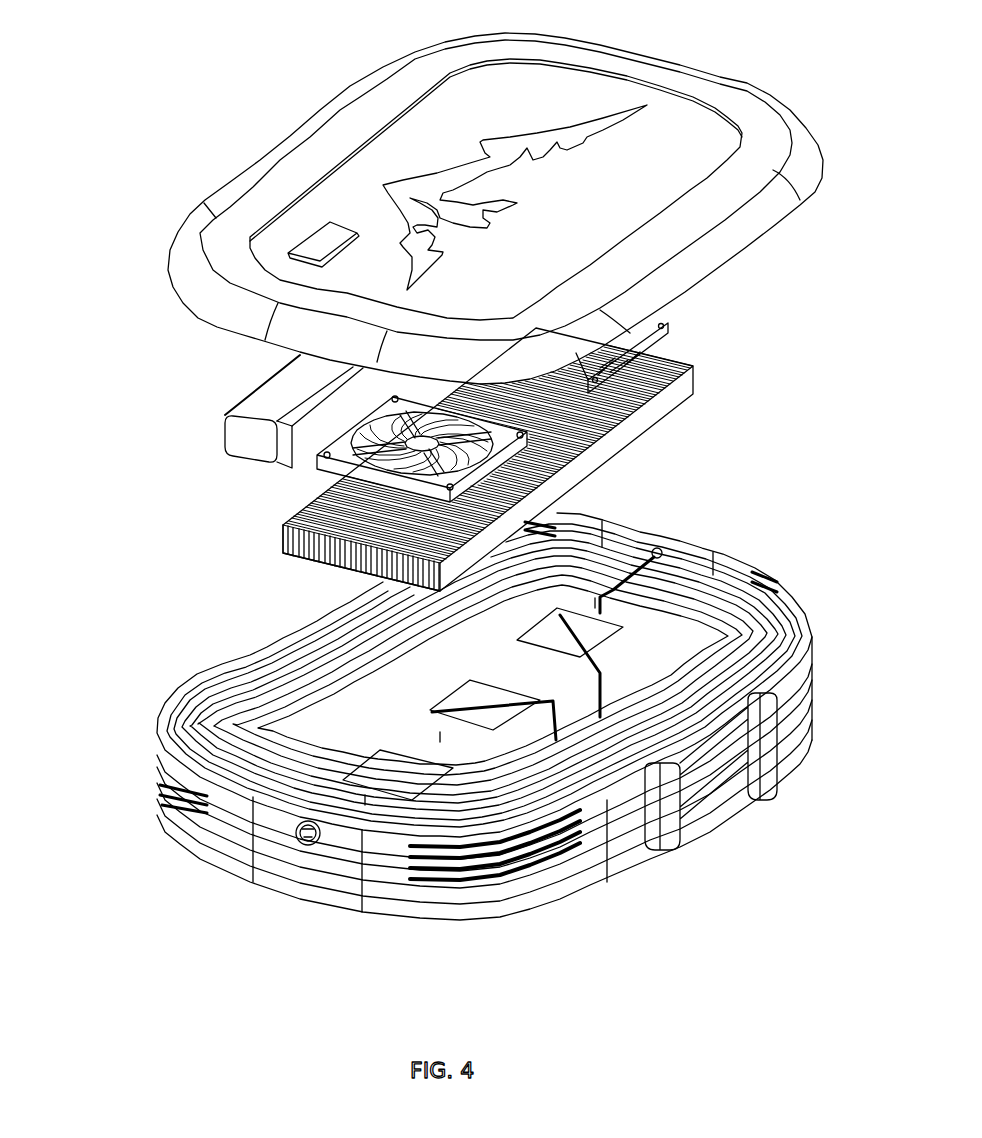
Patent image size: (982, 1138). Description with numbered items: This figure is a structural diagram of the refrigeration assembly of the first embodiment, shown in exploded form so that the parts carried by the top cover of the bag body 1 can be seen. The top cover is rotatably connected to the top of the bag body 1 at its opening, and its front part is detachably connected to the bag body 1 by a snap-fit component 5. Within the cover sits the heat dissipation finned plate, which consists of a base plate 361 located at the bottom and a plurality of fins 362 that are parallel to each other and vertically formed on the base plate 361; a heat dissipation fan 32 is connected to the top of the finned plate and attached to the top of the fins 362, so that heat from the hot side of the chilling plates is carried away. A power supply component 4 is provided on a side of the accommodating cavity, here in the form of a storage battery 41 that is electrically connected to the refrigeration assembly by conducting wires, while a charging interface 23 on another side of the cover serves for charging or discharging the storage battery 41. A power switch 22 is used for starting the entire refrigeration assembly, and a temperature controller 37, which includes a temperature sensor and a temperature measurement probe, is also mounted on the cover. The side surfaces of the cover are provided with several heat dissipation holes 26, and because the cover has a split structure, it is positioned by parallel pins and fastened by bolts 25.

The bag body 1 is at (415, 100).
The temperature controller 37 is at (323, 247).
The heat dissipation fan 32 is at (668, 333).
The power supply component 4 is at (118, 500).
The storage battery 41 is at (255, 440).
The base plate 361 is at (293, 557).
The fin 362 is at (288, 540).
The heat dissipation holes 26 is at (188, 798).
The power switch 22 is at (660, 551).
The bolt 25 is at (562, 724).
The charging interface 23 is at (303, 847).
The snap-fit component 5 is at (723, 765).